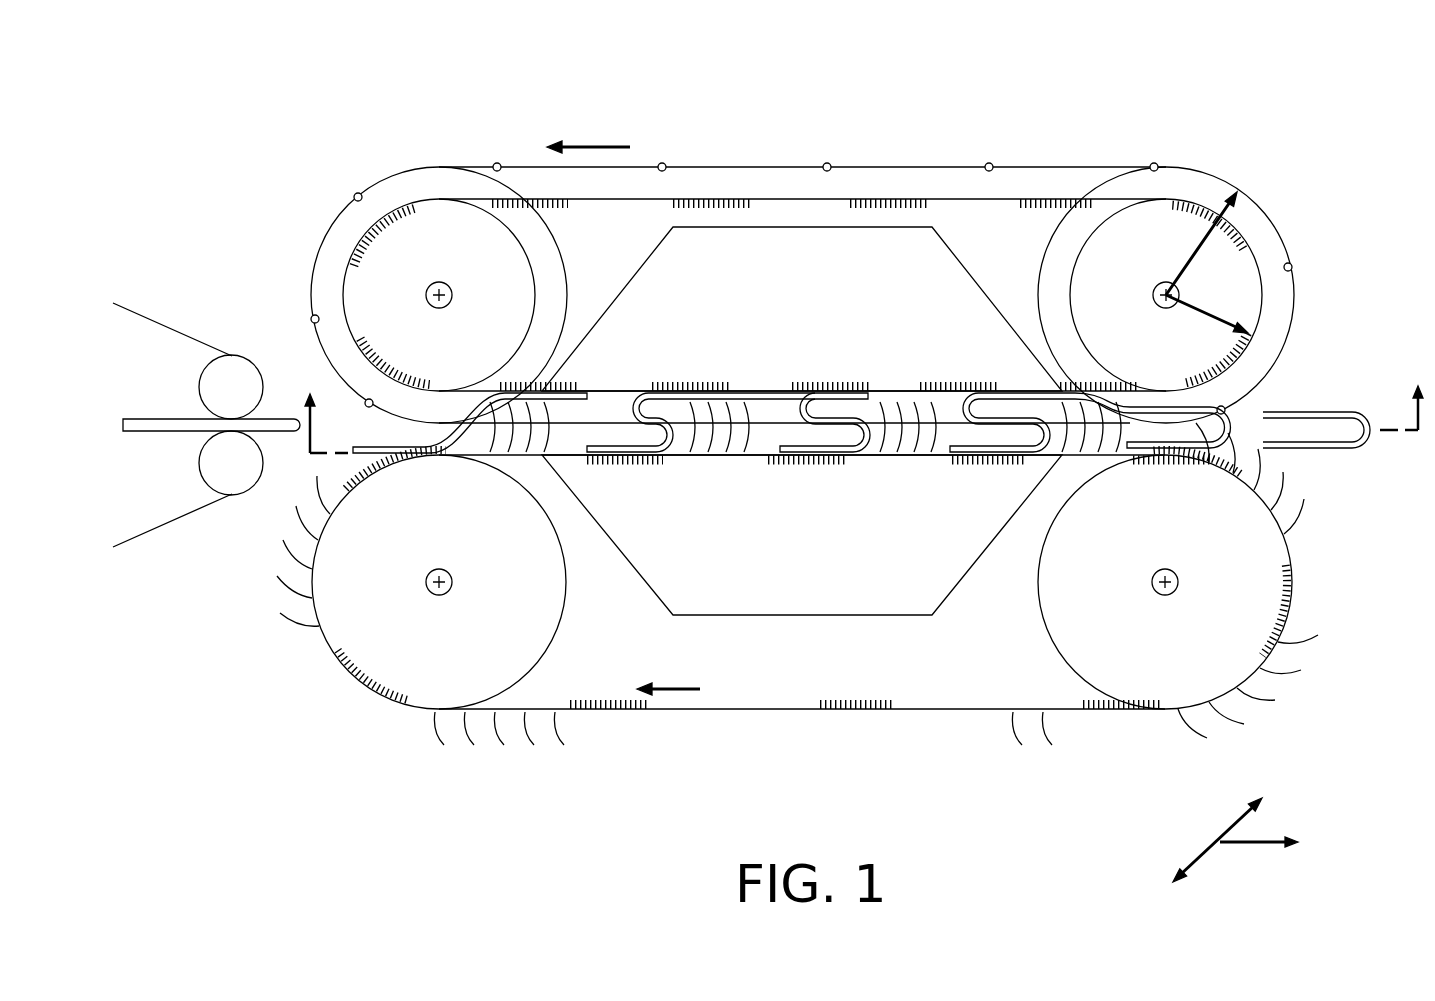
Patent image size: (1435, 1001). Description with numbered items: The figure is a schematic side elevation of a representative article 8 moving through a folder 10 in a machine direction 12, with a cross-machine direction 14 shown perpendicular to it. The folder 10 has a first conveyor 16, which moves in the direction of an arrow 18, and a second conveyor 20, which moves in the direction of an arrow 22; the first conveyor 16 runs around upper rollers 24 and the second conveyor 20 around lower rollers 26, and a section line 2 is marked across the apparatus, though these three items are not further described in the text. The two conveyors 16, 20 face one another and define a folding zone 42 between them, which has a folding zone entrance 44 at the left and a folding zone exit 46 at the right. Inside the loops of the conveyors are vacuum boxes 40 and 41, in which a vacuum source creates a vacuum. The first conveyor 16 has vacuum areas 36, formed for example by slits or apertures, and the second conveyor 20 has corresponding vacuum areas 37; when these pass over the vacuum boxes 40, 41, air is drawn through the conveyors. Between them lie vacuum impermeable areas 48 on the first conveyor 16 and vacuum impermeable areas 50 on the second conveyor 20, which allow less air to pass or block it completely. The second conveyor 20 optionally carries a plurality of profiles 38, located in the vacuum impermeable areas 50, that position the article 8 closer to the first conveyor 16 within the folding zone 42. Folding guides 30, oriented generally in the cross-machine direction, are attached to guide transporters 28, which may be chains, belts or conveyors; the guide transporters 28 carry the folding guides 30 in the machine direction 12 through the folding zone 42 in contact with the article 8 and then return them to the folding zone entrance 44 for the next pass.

The section line 2- 2 is at (860, 401).
The article 8 is at (293, 420).
The folder 10 is at (1112, 112).
The machine direction 12 is at (1245, 845).
The cross-machine direction 14 is at (1222, 830).
The first conveyor 16 is at (628, 200).
The arrow 18 is at (582, 146).
The second conveyor 20 is at (855, 712).
The arrow 22 is at (688, 686).
The upper rollers 24 is at (443, 282).
The lower rollers 26 is at (432, 593).
The guide transporters 28 is at (718, 166).
The folding guides 30 is at (827, 163).
The vacuum areas 36 is at (586, 358).
The vacuum areas 37 is at (611, 490).
The profiles 38 is at (445, 735).
The vacuum box 40 is at (796, 308).
The vacuum box 41 is at (796, 598).
The folding zone 42 is at (625, 418).
The folding zone entrance 44 is at (345, 466).
The folding zone exit 46 is at (1255, 403).
The vacuum impermeable areas 48 is at (742, 392).
The vacuum impermeable areas 50 is at (775, 201).